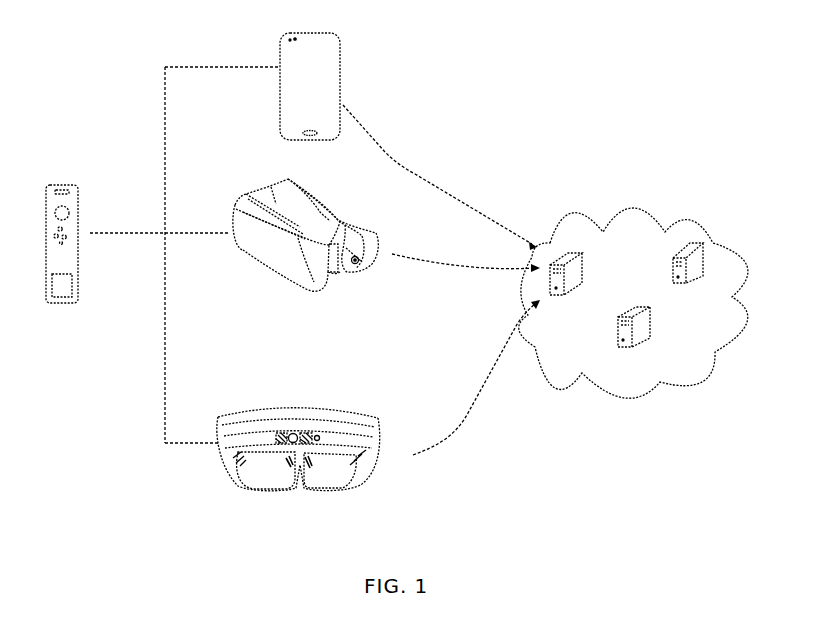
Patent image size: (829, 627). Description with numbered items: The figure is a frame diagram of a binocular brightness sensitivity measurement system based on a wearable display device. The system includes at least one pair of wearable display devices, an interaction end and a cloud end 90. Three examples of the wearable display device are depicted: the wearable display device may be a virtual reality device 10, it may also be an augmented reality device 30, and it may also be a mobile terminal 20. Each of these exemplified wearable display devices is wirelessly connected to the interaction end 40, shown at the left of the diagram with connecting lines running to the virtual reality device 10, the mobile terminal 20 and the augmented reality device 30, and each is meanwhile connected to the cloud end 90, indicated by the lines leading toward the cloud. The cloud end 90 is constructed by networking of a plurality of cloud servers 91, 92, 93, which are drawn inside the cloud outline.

The virtual reality device 10 is at (337, 280).
The mobile terminal 20 is at (337, 70).
The augmented reality device 30 is at (347, 490).
The interaction end 40 is at (62, 303).
The cloud end 90 is at (632, 398).
The cloud server 91 is at (566, 286).
The cloud server 92 is at (688, 274).
The cloud server 93 is at (634, 338).